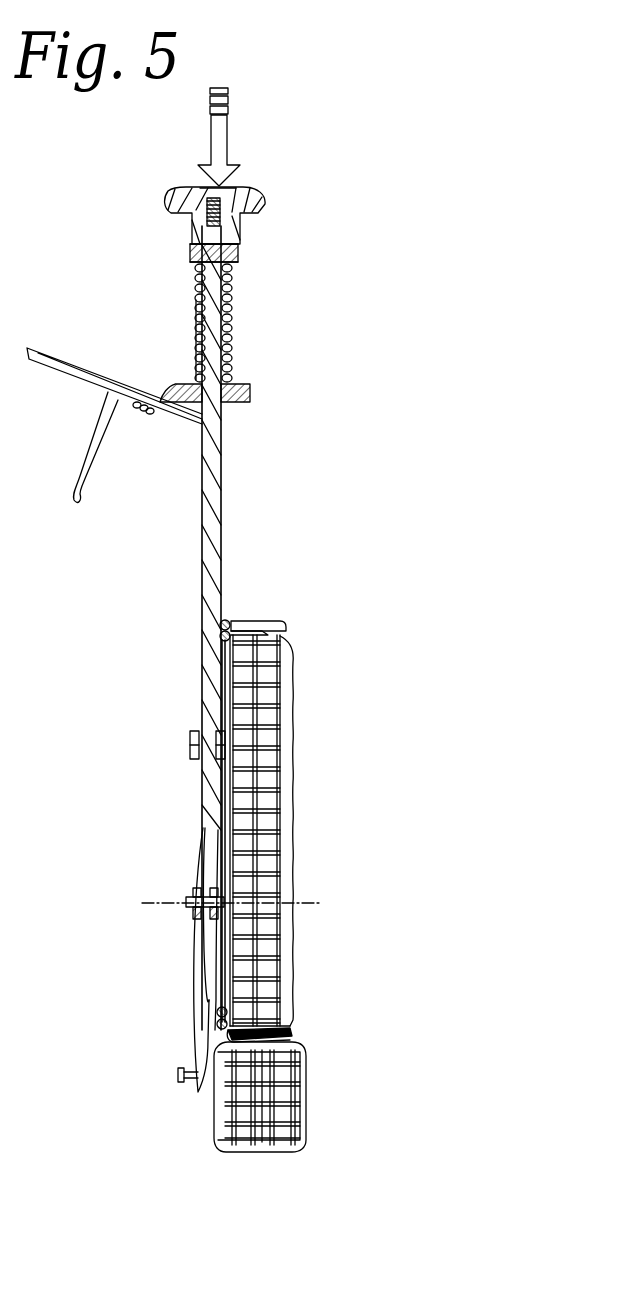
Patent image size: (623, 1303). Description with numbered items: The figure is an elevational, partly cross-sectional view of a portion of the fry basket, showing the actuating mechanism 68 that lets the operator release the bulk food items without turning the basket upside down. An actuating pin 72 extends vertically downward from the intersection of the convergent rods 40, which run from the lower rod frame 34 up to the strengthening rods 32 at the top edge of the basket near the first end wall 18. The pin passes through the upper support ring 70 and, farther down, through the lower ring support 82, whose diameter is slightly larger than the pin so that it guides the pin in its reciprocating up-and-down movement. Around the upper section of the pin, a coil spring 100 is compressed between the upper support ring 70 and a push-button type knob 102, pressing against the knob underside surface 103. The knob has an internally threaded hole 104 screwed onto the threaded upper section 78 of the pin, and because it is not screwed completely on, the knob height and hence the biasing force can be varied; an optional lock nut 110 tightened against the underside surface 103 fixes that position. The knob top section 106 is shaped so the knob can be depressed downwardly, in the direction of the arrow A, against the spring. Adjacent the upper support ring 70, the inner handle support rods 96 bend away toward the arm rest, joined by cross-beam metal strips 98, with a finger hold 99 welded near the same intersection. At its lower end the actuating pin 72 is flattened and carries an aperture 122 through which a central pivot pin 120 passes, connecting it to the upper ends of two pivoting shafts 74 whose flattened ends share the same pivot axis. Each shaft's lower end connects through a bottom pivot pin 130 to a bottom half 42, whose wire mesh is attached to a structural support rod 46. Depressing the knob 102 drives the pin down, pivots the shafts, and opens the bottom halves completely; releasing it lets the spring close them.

The arrow A is at (228, 130).
The first end wall 18 is at (226, 808).
The strengthening rods 32 is at (256, 632).
The lower rod frame 34 is at (288, 1032).
The convergent rods 40 is at (214, 940).
The bottom half 42 is at (262, 1142).
The structural support rod 46 is at (214, 1112).
The actuating mechanism 68 is at (134, 546).
The upper support ring 70 is at (250, 394).
The actuating pin 72 is at (222, 492).
The pivoting shafts 74 is at (198, 975).
The threaded upper section 78 is at (200, 293).
The lower ring support 82 is at (190, 745).
The inner handle support rods 96 is at (60, 352).
The metal strips 98 is at (142, 410).
The finger hold 99 is at (95, 440).
The coil spring 100 is at (196, 342).
The knob 102 is at (172, 213).
The underside surface 103 is at (236, 270).
The internally threaded hole 104 is at (242, 188).
The knob top section 106 is at (264, 205).
The lock nut 110 is at (196, 256).
The central pivot pin 120 is at (186, 900).
The aperture 122 is at (198, 893).
The bottom pivot pin 130 is at (180, 1078).